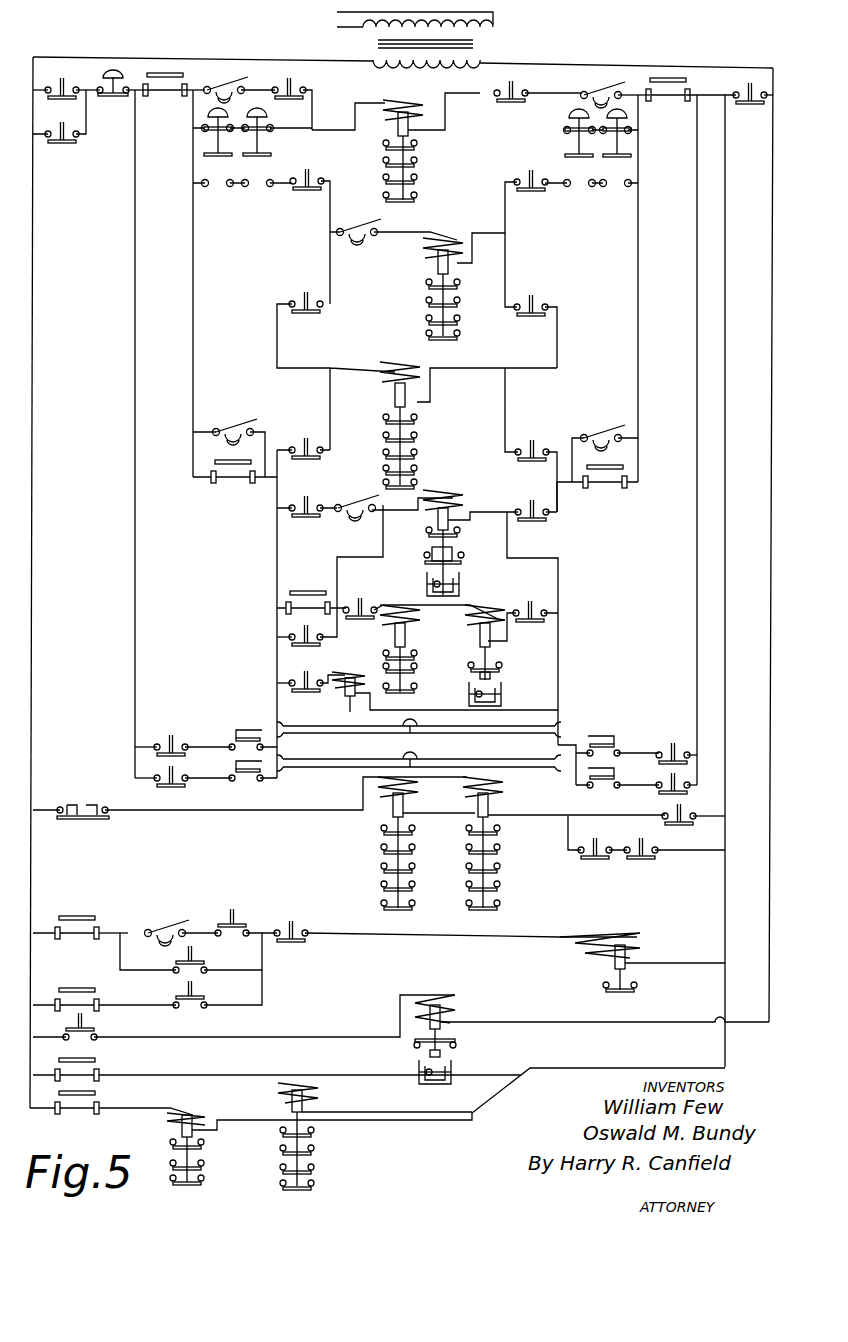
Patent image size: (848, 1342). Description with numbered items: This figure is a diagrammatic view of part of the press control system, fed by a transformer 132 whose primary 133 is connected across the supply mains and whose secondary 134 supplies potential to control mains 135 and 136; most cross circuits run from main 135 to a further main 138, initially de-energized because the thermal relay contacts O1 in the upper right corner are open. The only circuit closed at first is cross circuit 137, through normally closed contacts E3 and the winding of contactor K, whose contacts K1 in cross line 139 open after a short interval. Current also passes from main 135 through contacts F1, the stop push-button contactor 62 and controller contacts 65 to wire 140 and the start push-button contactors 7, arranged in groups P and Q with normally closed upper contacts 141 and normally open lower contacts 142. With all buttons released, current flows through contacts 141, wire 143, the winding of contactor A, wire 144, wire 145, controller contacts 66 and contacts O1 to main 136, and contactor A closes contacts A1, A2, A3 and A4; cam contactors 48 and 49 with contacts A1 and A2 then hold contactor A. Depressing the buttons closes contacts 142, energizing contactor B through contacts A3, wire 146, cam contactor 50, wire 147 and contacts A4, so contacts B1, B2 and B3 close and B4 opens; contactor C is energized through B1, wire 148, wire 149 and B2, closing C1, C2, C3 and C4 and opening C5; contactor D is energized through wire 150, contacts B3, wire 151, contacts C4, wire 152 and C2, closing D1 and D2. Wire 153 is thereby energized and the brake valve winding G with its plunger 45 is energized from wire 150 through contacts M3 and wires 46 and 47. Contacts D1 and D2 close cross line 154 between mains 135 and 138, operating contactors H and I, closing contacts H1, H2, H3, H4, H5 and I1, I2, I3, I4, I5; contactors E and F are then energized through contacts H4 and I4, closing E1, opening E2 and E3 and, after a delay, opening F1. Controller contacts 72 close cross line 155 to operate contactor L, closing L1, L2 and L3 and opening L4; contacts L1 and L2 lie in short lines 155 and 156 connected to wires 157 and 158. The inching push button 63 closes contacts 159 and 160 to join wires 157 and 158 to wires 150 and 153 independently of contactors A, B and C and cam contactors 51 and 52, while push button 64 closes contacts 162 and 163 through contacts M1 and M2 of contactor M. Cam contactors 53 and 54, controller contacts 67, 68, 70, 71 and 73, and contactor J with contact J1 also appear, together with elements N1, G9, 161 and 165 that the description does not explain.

The primary 133 is at (493, 27).
The transformer 132 is at (473, 46).
The secondary 134 is at (480, 62).
The control main 135 is at (33, 465).
The control main 136 is at (770, 470).
The main 138 is at (726, 532).
The relay N contact N1 is at (68, 79).
The normally closed contact F1 is at (508, 665).
The stop push button contactor 62 is at (113, 100).
The pair of contacts 65 is at (165, 90).
The cam operated contactor 48 is at (228, 86).
The normally open contact A1 is at (428, 143).
The wire 140 is at (193, 120).
The wire 157 is at (135, 630).
The group of start contactors P is at (415, 148).
The start push button contactor 7 is at (417, 127).
The normally closed upper contacts 141 is at (415, 141).
The normally open lower contacts 142 is at (215, 188).
The group of start contactors Q is at (568, 154).
The wire 143 is at (327, 130).
The wire 144 is at (425, 130).
The contactor A is at (395, 130).
The normally open contact A2 is at (416, 160).
The normally open contact A3 is at (428, 177).
The normally open contact A4 is at (416, 195).
The cam operated contactor 49 is at (603, 88).
The pair of contacts 66 is at (668, 95).
The contacts O1 is at (753, 86).
The wire 145 is at (638, 146).
The wire 158 is at (697, 649).
The wire 146 is at (330, 233).
The cam operated contactor 50 is at (393, 226).
The wire 147 is at (505, 233).
The contactor B is at (435, 270).
The normally open contact B1 is at (470, 282).
The normally open contact B2 is at (459, 300).
The normally open contact B3 is at (470, 318).
The normally closed contact B4 is at (470, 333).
The wire 148 is at (302, 378).
The wire 149 is at (531, 372).
The contactor C is at (393, 398).
The normally open contact C1 is at (428, 417).
The normally open contact C2 is at (416, 435).
The normally open contact C3 is at (428, 452).
The normally open contact C4 is at (416, 468).
The normally closed contact C5 is at (428, 482).
The wire 150 is at (277, 627).
The cam operated contactor 51 is at (229, 441).
The pair of contacts 67 is at (235, 478).
The cam operated contactor 52 is at (605, 446).
The pair of contacts 68 is at (597, 483).
The wire 152 is at (558, 508).
The cam operated contactor 53 is at (394, 501).
The contactor D is at (432, 524).
The normally open contact D1 is at (465, 530).
The normally open contact D2 is at (465, 555).
The wire 151 is at (356, 556).
The wire 153 is at (558, 588).
The resistor G9 is at (311, 603).
The normally open contact H4 is at (428, 884).
The normally open contact I4 is at (502, 884).
The contactor E is at (408, 640).
The contactor F is at (474, 640).
The normally open contact E1 is at (416, 653).
The normally closed contact E2 is at (416, 666).
The normally closed contact E3 is at (416, 686).
The normally closed contact M3 is at (206, 1178).
The circuit wire 46 is at (332, 667).
The brake valve winding G is at (351, 680).
The plunger 45 is at (345, 700).
The circuit wire 47 is at (456, 707).
The inching push button contactor 63 is at (420, 722).
The push button contactor 64 is at (420, 754).
The normally open contact L1 is at (327, 1130).
The cross line 155 is at (208, 740).
The contact 159 is at (238, 736).
The normally open contact M1 is at (219, 1142).
The contact 162 is at (248, 786).
The short line 156 is at (606, 746).
The contact 160 is at (608, 752).
The normally open contact L2 is at (313, 1148).
The contact 163 is at (594, 790).
The normally open contact M2 is at (206, 1163).
The cross line 154 is at (33, 818).
The contactor H is at (378, 828).
The contactor I is at (466, 826).
The normally open contact H1 is at (414, 828).
The normally open contact H2 is at (414, 847).
The normally open contact H3 is at (414, 866).
The normally open contact H5 is at (414, 903).
The normally open contact I1 is at (500, 828).
The normally open contact I2 is at (500, 847).
The normally open contact I3 is at (500, 866).
The normally open contact I5 is at (500, 903).
The cross line 139 is at (33, 935).
The pair of contacts 70 is at (91, 933).
The cam operated contactor 54 is at (167, 926).
The normally closed contact K1 is at (299, 928).
The contactor J is at (610, 962).
The normally open contact J1 is at (636, 985).
The pair of contacts 71 is at (147, 993).
The conductor 161 is at (125, 1010).
The cross circuit 137 is at (33, 1038).
The contactor K is at (450, 1018).
The controller contacts 72 is at (379, 1085).
The conductor 165 is at (32, 1086).
The pair of contacts 73 is at (111, 1103).
The contactor M is at (178, 1128).
The contactor L is at (288, 1100).
The normally open contact L3 is at (313, 1167).
The normally closed contact L4 is at (313, 1183).